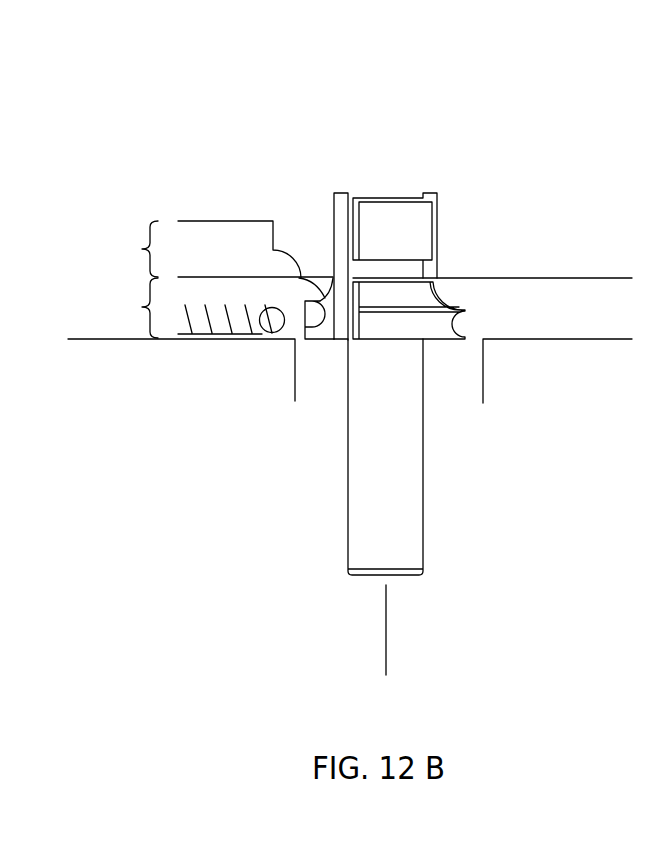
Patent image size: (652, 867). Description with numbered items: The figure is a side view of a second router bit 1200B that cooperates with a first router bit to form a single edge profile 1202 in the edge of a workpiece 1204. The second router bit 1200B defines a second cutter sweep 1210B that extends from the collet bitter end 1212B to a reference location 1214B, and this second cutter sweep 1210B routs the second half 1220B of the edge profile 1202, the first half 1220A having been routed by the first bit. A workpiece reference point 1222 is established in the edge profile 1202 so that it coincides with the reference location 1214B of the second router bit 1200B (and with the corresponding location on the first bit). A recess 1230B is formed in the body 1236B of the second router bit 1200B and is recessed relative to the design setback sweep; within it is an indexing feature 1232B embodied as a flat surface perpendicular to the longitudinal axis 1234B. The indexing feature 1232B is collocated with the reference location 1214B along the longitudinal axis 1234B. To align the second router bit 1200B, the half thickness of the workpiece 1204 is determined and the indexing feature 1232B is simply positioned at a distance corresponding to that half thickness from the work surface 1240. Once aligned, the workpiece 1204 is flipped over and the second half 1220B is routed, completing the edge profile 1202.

The second router bit 1200B is at (295, 148).
The edge profile 1202 is at (299, 276).
The workpiece 1204 is at (255, 260).
The second cutter sweep 1210B is at (299, 279).
The collet bitter end 1212B is at (333, 342).
The reference location 1214B is at (333, 277).
The first half 1220A is at (141, 250).
The second half 1220B is at (141, 307).
The workpiece reference point 1222 is at (300, 277).
The recess 1230B is at (442, 248).
The indexing feature 1232B is at (408, 281).
The longitudinal axis 1234B is at (386, 630).
The body 1236B is at (427, 323).
The work surface 1240 is at (188, 339).